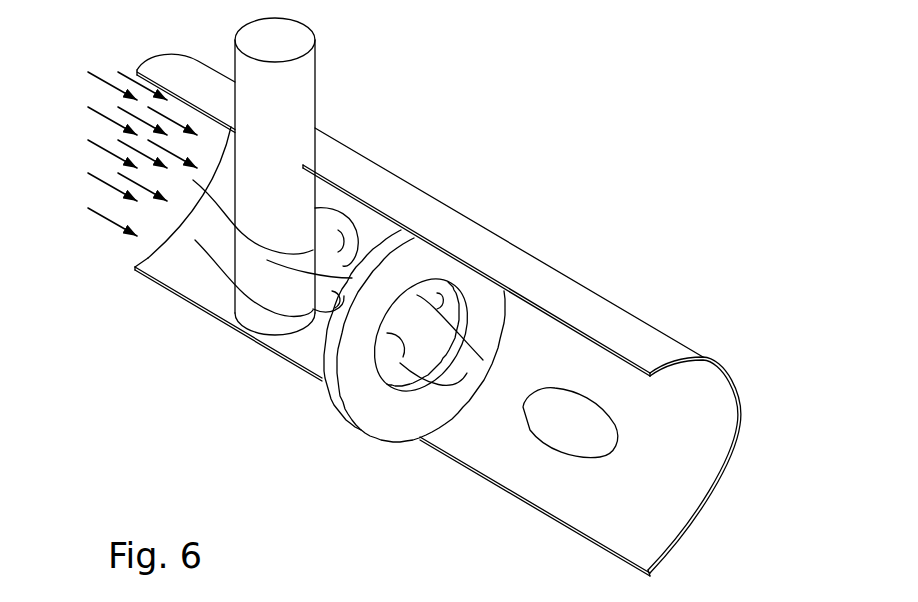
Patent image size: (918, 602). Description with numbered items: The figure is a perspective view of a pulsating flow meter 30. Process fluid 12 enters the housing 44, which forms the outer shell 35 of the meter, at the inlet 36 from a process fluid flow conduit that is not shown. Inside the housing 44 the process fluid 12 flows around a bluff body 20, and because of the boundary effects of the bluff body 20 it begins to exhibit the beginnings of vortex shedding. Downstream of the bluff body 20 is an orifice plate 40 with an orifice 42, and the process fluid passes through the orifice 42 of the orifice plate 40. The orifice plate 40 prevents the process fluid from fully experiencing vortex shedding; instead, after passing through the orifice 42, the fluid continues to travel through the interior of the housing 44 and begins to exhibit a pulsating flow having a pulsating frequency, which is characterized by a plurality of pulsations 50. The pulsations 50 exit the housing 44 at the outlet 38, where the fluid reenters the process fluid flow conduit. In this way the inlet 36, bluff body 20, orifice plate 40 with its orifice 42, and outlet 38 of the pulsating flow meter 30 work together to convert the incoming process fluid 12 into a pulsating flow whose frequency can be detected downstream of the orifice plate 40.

The process fluid 12 is at (97, 114).
The bluff body 20 is at (316, 71).
The pulsating flow meter 30 is at (416, 314).
The outer shell 35 is at (528, 252).
The inlet 36 is at (148, 258).
The outlet 38 is at (456, 421).
The orifice plate 40 is at (418, 373).
The orifice 42 is at (423, 387).
The housing 44 is at (420, 215).
The pulsations 50 is at (619, 441).